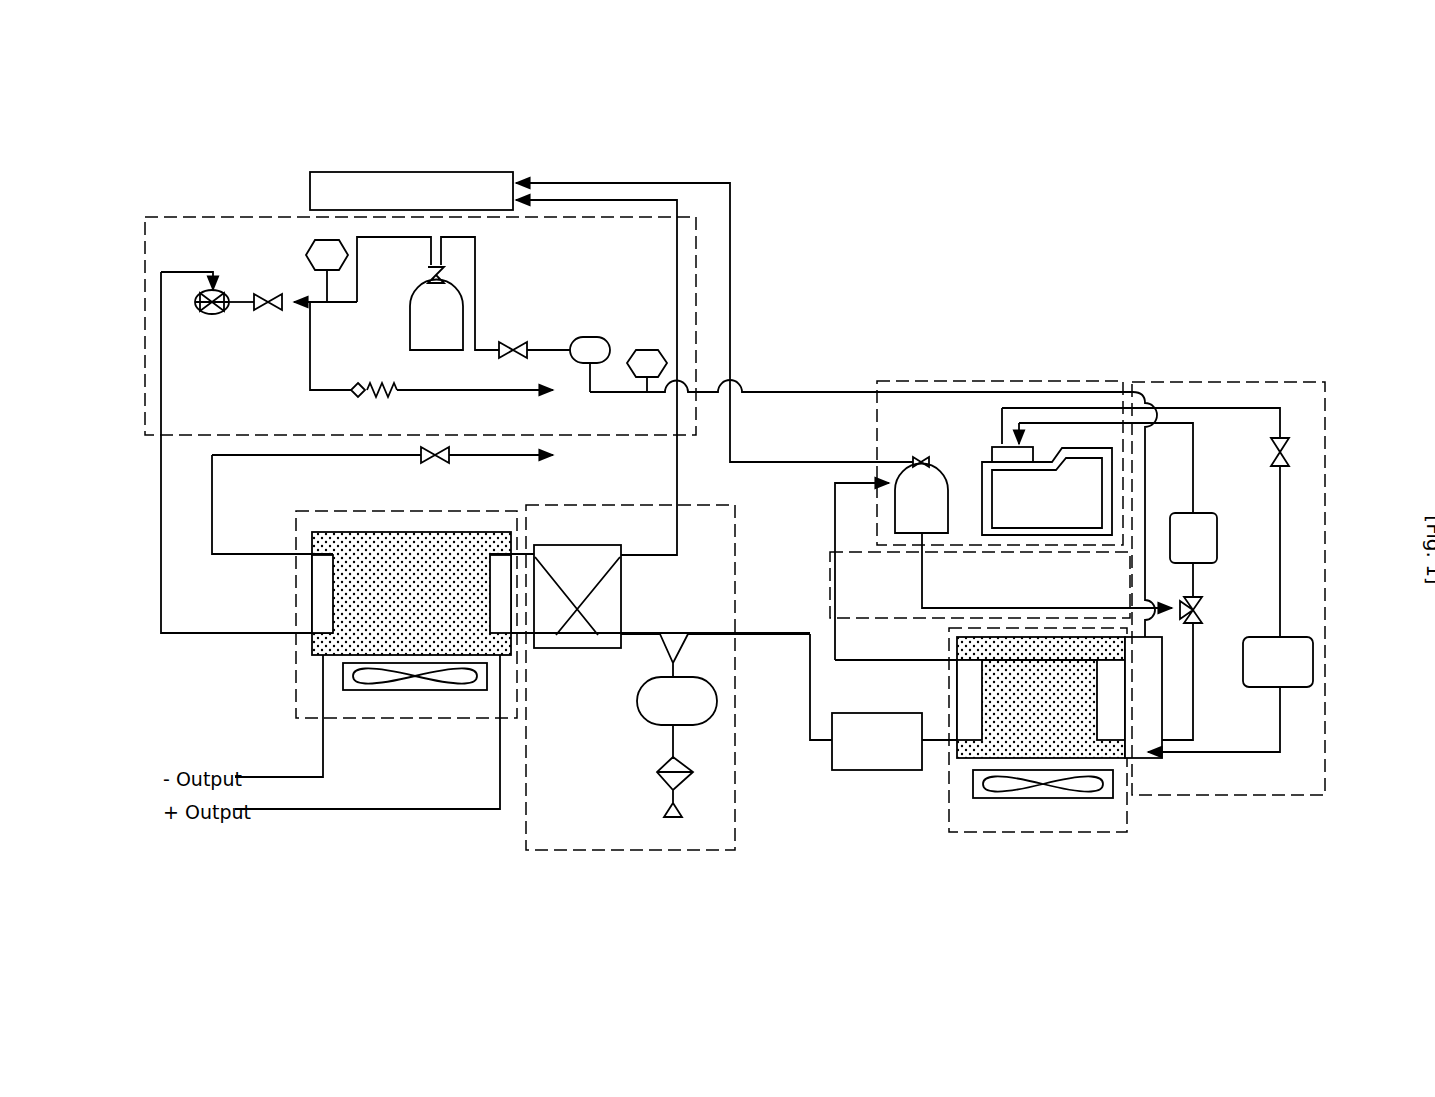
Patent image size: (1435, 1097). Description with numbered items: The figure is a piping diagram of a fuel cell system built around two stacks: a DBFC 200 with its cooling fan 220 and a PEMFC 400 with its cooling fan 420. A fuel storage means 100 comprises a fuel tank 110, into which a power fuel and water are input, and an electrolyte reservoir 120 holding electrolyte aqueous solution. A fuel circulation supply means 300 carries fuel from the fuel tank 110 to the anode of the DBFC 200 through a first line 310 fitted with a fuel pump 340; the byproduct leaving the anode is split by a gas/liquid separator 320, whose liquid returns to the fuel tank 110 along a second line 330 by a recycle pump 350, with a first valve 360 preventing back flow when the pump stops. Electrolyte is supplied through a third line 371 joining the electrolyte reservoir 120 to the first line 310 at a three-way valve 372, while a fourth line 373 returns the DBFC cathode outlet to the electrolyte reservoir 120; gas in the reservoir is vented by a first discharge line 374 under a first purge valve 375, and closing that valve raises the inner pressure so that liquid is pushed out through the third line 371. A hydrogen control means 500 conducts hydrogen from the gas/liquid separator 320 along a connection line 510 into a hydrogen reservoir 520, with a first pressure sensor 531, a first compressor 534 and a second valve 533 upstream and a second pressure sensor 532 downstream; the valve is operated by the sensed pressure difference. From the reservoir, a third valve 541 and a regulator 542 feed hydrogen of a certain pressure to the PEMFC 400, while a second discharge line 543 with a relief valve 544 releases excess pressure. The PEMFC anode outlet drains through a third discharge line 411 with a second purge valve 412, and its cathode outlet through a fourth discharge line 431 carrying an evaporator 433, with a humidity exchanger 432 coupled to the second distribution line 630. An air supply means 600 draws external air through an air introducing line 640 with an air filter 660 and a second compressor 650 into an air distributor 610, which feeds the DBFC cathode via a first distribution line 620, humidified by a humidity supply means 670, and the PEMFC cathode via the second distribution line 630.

The fuel storage means 100 is at (1065, 378).
The fuel tank 110 is at (986, 449).
The electrolyte reservoir 120 is at (940, 455).
The DBFC 200 is at (978, 836).
The cooling fan of the DBFC 220 is at (1108, 797).
The fuel circulation supply means 300 is at (1309, 378).
The first line 310 is at (1196, 645).
The gas/liquid separator 320 is at (1140, 758).
The second line 330 is at (1281, 500).
The fuel pump 340 is at (1218, 538).
The recycle pump 350 is at (1314, 660).
The first valve 360 is at (1287, 455).
The third line 371 is at (947, 610).
The three-way valve 372 is at (1201, 598).
The fourth line 373 is at (852, 481).
The first discharge line 374 is at (732, 222).
The first purge valve 375 is at (923, 458).
The PEMFC 400 is at (293, 690).
The third discharge line 411 is at (212, 510).
The second purge valve 412 is at (420, 452).
The cooling fan of the PEMFC 420 is at (357, 690).
The fourth discharge line 431 is at (678, 208).
The humidity exchanger 432 is at (555, 650).
The evaporator 433 is at (439, 172).
The hydrogen control means 500 is at (160, 212).
The connection line 510 is at (710, 391).
The hydrogen reservoir 520 is at (408, 283).
The first pressure sensor 531 is at (661, 350).
The second pressure sensor 532 is at (314, 240).
The second valve 533 is at (520, 345).
The first compressor 534 is at (600, 337).
The third valve 541 is at (267, 290).
The regulator 542 is at (233, 285).
The second discharge line 543 is at (487, 390).
The relief valve 544 is at (356, 383).
The air supply means 600 is at (522, 787).
The air distributor 610 is at (659, 637).
The first distribution line 620 is at (810, 720).
The second distribution line 630 is at (612, 650).
The air introducing line 640 is at (707, 702).
The second compressor 650 is at (762, 637).
The air filter 660 is at (663, 778).
The humidity supply means 670 is at (853, 773).